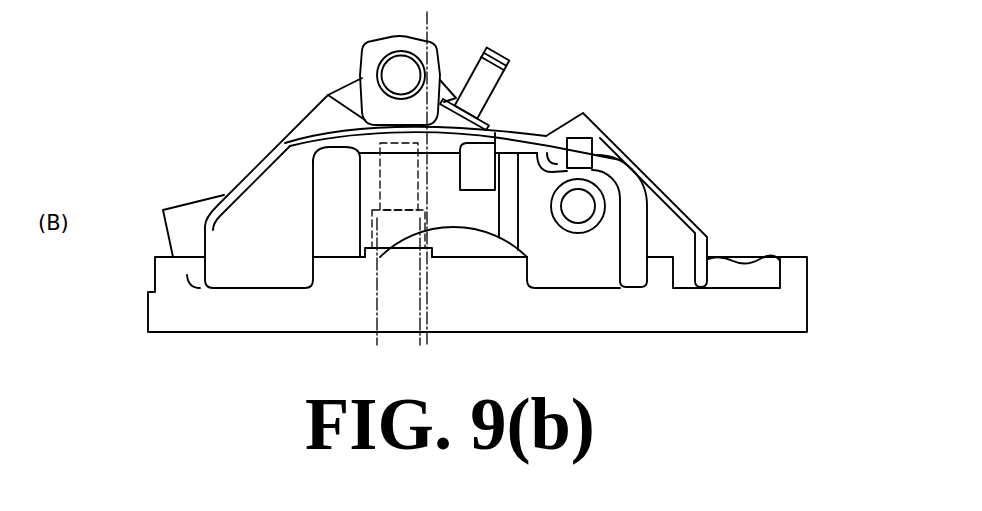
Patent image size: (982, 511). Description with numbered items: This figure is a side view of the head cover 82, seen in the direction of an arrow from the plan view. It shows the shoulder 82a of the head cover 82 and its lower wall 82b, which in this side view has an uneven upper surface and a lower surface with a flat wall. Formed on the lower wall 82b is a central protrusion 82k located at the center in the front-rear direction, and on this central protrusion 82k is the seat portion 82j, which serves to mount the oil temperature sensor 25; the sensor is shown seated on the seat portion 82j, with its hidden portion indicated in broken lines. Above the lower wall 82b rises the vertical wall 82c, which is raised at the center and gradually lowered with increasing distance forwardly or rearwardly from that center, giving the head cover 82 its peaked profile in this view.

The head cover 82 is at (288, 125).
The oil temperature sensor 25 is at (377, 185).
The vertical wall 82c is at (285, 228).
The seat portion 82j is at (393, 249).
The central protrusion 82k is at (460, 256).
The shoulder 82a is at (541, 284).
The lower wall 82b is at (580, 312).